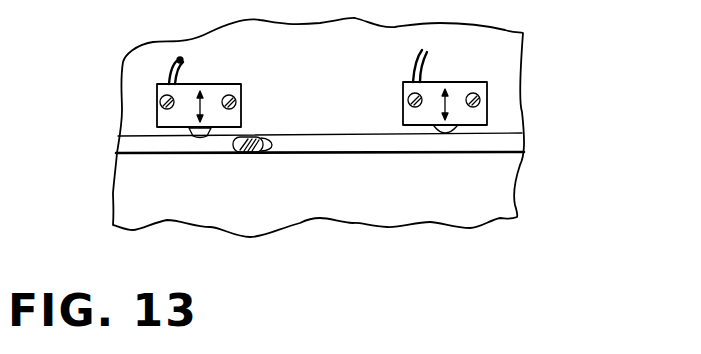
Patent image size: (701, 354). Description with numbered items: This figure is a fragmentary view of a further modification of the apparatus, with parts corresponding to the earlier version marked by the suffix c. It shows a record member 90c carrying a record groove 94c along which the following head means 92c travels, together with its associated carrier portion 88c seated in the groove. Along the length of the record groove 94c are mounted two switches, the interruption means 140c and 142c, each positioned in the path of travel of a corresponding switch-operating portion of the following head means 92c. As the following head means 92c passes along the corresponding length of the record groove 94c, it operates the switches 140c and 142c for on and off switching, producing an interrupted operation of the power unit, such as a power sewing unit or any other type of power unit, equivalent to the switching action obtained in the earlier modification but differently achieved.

The record member 90c is at (355, 57).
The record groove 94c is at (362, 144).
The interruption means switch 140c is at (243, 110).
The interruption means switch 142c is at (488, 90).
The following head carrier 88c is at (232, 155).
The following head means 92c is at (270, 155).